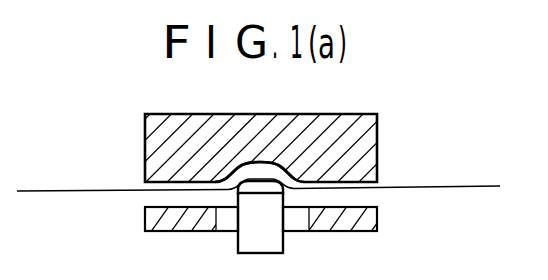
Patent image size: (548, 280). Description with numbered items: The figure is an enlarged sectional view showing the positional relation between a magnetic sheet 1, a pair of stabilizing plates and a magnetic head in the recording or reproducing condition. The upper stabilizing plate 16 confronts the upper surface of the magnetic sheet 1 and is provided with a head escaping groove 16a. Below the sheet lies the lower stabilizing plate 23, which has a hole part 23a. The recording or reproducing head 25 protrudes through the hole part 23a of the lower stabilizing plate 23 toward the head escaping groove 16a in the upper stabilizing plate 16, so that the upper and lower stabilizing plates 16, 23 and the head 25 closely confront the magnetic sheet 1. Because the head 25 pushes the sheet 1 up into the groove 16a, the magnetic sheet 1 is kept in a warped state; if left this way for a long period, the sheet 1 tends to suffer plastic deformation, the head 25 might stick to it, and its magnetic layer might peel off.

The magnetic sheet 1 is at (443, 184).
The upper stabilizing plate 16 is at (344, 124).
The head escaping groove 16a is at (260, 172).
The lower stabilizing plate 23 is at (356, 220).
The hole part 23a is at (227, 230).
The recording or reproducing head 25 is at (277, 237).